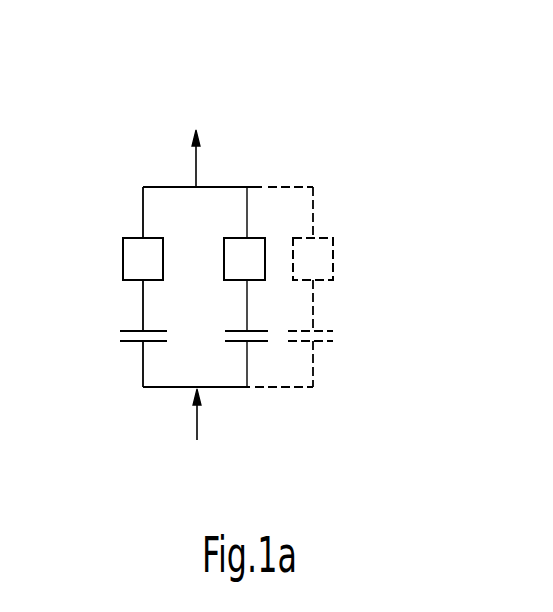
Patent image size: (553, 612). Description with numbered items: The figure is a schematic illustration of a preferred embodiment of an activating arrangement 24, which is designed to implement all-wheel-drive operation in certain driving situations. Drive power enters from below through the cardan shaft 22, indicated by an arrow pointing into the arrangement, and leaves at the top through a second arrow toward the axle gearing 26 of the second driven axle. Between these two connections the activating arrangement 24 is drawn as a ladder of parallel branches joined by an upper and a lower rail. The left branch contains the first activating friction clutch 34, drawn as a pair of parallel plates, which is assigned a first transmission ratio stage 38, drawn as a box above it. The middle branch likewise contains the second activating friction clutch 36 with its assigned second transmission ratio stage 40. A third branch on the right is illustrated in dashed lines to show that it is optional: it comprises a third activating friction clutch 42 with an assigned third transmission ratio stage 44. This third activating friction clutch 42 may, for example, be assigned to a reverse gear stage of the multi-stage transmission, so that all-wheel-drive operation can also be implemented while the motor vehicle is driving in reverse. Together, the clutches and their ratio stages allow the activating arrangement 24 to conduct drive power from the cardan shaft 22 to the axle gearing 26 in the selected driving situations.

The cardan shaft 22 is at (190, 430).
The activating arrangement 24 is at (280, 280).
The axle gearing 26 is at (201, 145).
The first activating friction clutch 34 is at (137, 345).
The second activating friction clutch 36 is at (233, 341).
The first transmission ratio stage 38 is at (123, 254).
The second transmission ratio stage 40 is at (237, 238).
The third activating friction clutch 42 is at (318, 342).
The third transmission ratio stage 44 is at (335, 258).